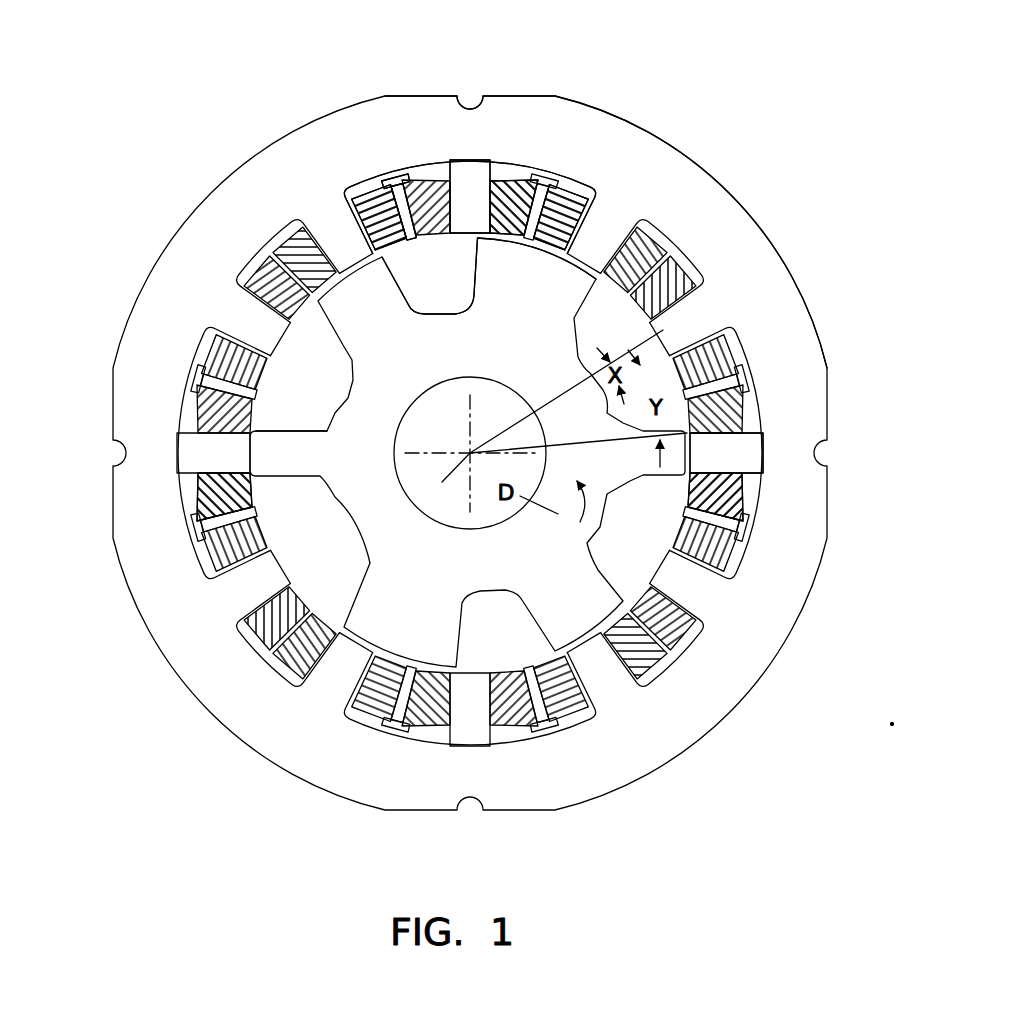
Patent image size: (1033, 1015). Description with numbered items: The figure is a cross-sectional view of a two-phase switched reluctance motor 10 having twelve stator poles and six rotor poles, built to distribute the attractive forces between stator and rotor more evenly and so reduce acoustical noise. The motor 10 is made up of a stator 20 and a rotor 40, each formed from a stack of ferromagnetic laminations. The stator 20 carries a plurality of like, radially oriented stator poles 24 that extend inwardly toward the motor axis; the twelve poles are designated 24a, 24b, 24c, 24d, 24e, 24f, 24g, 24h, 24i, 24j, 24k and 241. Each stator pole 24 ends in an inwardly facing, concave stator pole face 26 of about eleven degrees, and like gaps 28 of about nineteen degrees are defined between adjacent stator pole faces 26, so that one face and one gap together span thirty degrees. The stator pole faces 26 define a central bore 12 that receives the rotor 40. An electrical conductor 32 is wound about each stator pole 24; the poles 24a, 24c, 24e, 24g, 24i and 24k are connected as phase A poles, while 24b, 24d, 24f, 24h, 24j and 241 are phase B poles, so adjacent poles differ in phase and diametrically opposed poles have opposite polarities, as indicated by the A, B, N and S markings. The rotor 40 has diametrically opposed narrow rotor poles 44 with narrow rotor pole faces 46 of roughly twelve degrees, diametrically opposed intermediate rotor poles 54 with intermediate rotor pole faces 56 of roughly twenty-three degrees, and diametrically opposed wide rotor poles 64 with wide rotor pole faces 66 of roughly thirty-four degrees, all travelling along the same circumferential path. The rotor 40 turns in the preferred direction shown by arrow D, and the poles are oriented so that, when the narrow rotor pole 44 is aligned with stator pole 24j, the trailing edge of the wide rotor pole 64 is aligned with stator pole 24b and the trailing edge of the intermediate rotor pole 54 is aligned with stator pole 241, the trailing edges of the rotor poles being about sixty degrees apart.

The switched reluctance motor 10 is at (797, 85).
The central bore 12 is at (657, 520).
The stator 20 is at (637, 120).
The stator pole 24 is at (457, 176).
The stator pole 24a is at (478, 197).
The stator pole 24b is at (605, 237).
The stator pole 24c is at (697, 320).
The stator pole 24d is at (730, 457).
The stator pole 24e is at (690, 590).
The stator pole 24f is at (608, 683).
The stator pole 24g is at (500, 715).
The stator pole 24h is at (347, 687).
The stator pole 24i is at (232, 623).
The stator pole 24j is at (205, 462).
The stator pole 24k is at (245, 285).
The stator pole 241 is at (346, 226).
The stator pole face 26 is at (463, 240).
The gap 28 is at (598, 292).
The electrical conductor 32 is at (385, 187).
The rotor 40 is at (330, 494).
The narrow rotor pole 44 is at (742, 500).
The narrow rotor pole face 46 is at (690, 435).
The intermediate rotor pole 54 is at (372, 290).
The intermediate rotor pole face 56 is at (295, 222).
The wide rotor pole 64 is at (515, 205).
The wide rotor pole face 66 is at (560, 207).